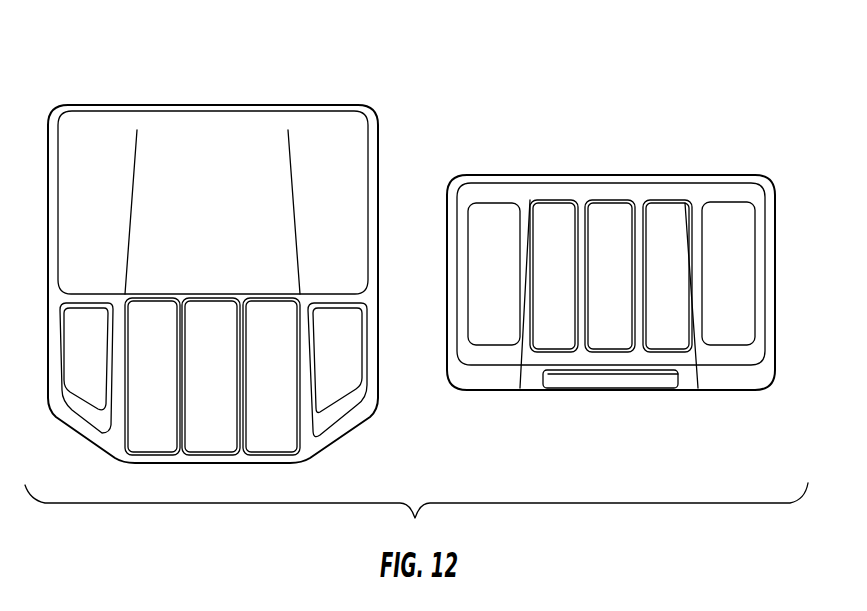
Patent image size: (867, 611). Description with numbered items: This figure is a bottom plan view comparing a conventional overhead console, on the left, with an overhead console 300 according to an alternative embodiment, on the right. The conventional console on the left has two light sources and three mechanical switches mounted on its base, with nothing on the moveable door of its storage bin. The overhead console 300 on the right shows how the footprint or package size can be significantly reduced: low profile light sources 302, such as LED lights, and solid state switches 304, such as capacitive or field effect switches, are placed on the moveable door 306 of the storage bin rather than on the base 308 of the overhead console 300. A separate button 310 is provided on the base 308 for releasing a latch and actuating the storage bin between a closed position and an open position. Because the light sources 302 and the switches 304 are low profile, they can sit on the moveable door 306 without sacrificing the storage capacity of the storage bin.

The overhead console 300 is at (675, 92).
The low profile light sources 302 is at (495, 218).
The solid state switches 304 is at (662, 216).
The moveable door 306 is at (718, 190).
The base 308 is at (757, 381).
The button 310 is at (667, 381).